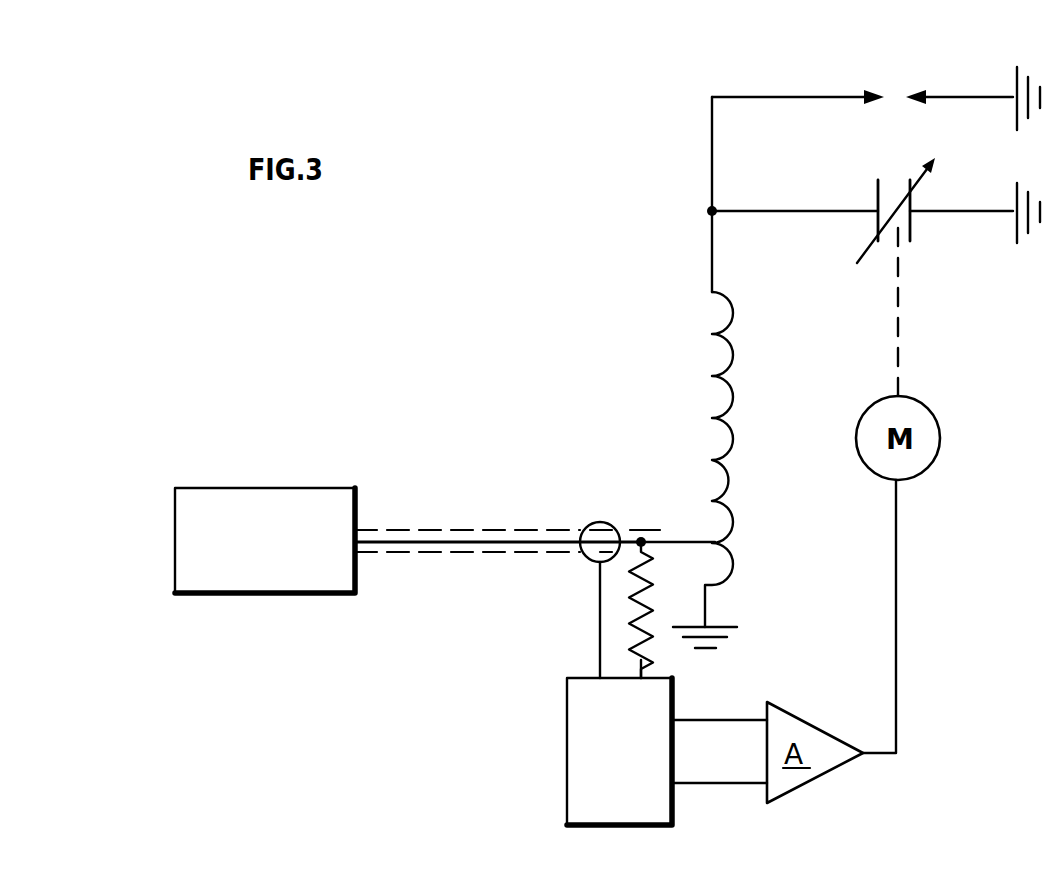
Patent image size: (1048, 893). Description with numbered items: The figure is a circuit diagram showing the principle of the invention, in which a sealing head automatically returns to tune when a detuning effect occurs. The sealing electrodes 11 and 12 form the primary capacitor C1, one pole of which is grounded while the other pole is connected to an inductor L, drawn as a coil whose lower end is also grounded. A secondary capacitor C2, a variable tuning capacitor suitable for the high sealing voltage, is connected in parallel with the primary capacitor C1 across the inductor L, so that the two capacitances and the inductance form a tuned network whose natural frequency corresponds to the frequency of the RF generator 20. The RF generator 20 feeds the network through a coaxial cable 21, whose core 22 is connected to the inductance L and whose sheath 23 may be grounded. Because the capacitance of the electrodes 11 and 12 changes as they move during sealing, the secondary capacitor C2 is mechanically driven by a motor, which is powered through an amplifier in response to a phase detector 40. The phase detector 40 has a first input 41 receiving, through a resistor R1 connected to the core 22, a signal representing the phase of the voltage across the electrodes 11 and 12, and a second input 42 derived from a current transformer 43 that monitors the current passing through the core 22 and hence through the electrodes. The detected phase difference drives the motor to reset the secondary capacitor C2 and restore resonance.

The electrode 11 is at (922, 103).
The electrode 12 is at (878, 101).
The RF generator 20 is at (273, 505).
The coaxial cable 21 is at (403, 518).
The core of the coaxial cable 22 is at (683, 541).
The sheath of the coaxial cable 23 is at (477, 552).
The phase detector 40 is at (575, 807).
The first input of the phase detector 41 is at (642, 665).
The second input of the phase detector 42 is at (598, 655).
The current transformer 43 is at (600, 522).
The primary capacitor C1 is at (899, 97).
The secondary capacitor C2 is at (898, 187).
The inductor L is at (713, 375).
The resistor R1 is at (645, 608).